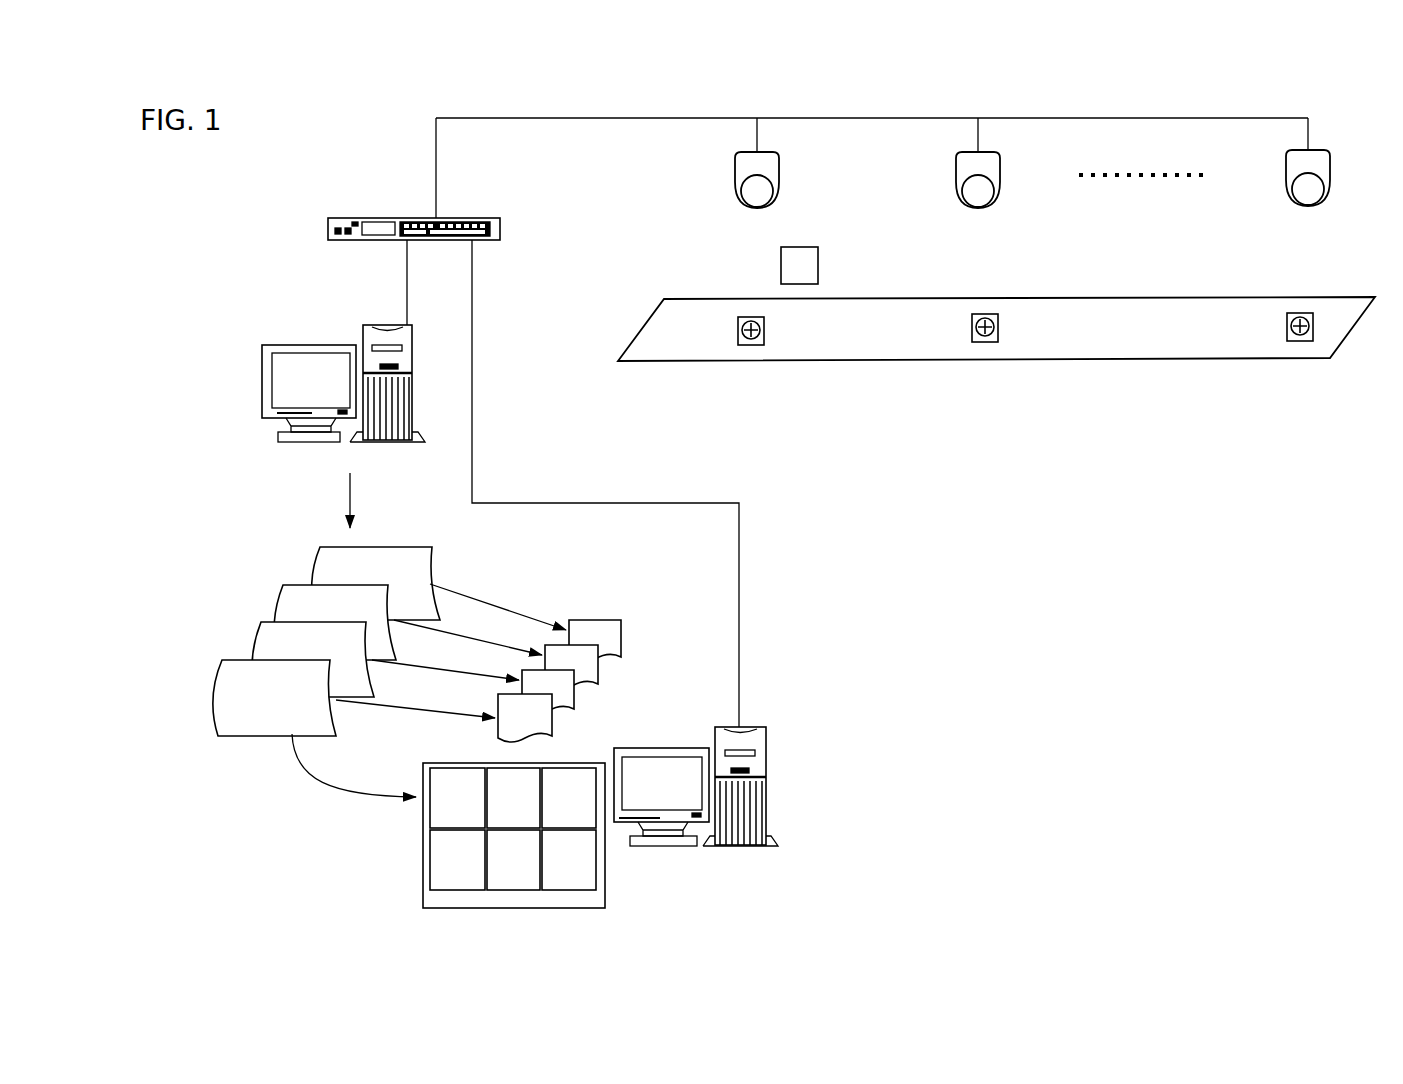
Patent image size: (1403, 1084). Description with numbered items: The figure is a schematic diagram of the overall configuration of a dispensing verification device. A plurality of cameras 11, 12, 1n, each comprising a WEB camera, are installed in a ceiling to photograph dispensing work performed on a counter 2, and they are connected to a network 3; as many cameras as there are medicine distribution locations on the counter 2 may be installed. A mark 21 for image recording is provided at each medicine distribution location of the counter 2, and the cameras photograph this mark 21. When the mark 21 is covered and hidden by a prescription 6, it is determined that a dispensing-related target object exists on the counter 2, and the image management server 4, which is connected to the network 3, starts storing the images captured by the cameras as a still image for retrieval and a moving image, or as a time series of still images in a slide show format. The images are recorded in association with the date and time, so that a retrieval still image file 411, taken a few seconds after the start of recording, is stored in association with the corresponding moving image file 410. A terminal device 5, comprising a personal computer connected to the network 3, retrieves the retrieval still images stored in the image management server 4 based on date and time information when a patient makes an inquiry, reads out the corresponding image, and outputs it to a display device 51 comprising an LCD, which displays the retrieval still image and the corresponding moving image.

The camera 11 is at (757, 171).
The camera 12 is at (978, 171).
The camera 1n is at (1312, 169).
The counter 2 is at (668, 323).
The mark 21 is at (751, 345).
The network 3 is at (365, 218).
The image management server 4 is at (296, 338).
The moving image file 410 is at (222, 669).
The retrieval still image file 411 is at (612, 630).
The terminal device 5 is at (777, 762).
The display device 51 is at (422, 878).
The prescription 6 is at (781, 263).